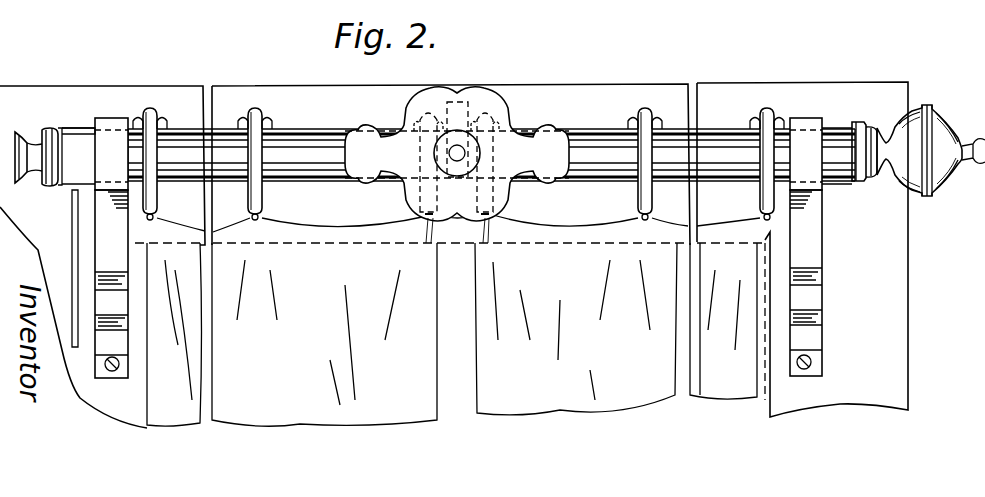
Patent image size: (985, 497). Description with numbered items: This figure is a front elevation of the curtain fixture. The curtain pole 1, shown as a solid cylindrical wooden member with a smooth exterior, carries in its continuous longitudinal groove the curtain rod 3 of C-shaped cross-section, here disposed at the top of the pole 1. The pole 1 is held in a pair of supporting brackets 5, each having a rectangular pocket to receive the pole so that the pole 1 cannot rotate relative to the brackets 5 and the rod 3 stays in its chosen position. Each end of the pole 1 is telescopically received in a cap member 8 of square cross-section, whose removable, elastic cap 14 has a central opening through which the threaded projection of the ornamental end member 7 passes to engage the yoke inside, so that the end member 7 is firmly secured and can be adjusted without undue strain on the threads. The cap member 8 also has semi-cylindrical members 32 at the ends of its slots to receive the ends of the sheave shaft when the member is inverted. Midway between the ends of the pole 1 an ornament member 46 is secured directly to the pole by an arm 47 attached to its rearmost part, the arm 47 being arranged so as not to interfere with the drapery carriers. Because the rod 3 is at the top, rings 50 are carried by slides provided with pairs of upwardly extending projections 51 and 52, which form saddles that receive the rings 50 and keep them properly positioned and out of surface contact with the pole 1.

The curtain pole 1 is at (318, 183).
The curtain rod 3 is at (312, 130).
The supporting bracket 5 is at (102, 236).
The ornamental end member 7 is at (26, 130).
The cap member 8 is at (68, 145).
The removable cap 14 is at (60, 178).
The semi-cylindrical member 32 is at (82, 128).
The ornament member 46 is at (506, 108).
The arm 47 is at (475, 92).
The ring 50 is at (163, 206).
The upwardly extending projection 51 is at (243, 120).
The upwardly extending projection 52 is at (270, 124).